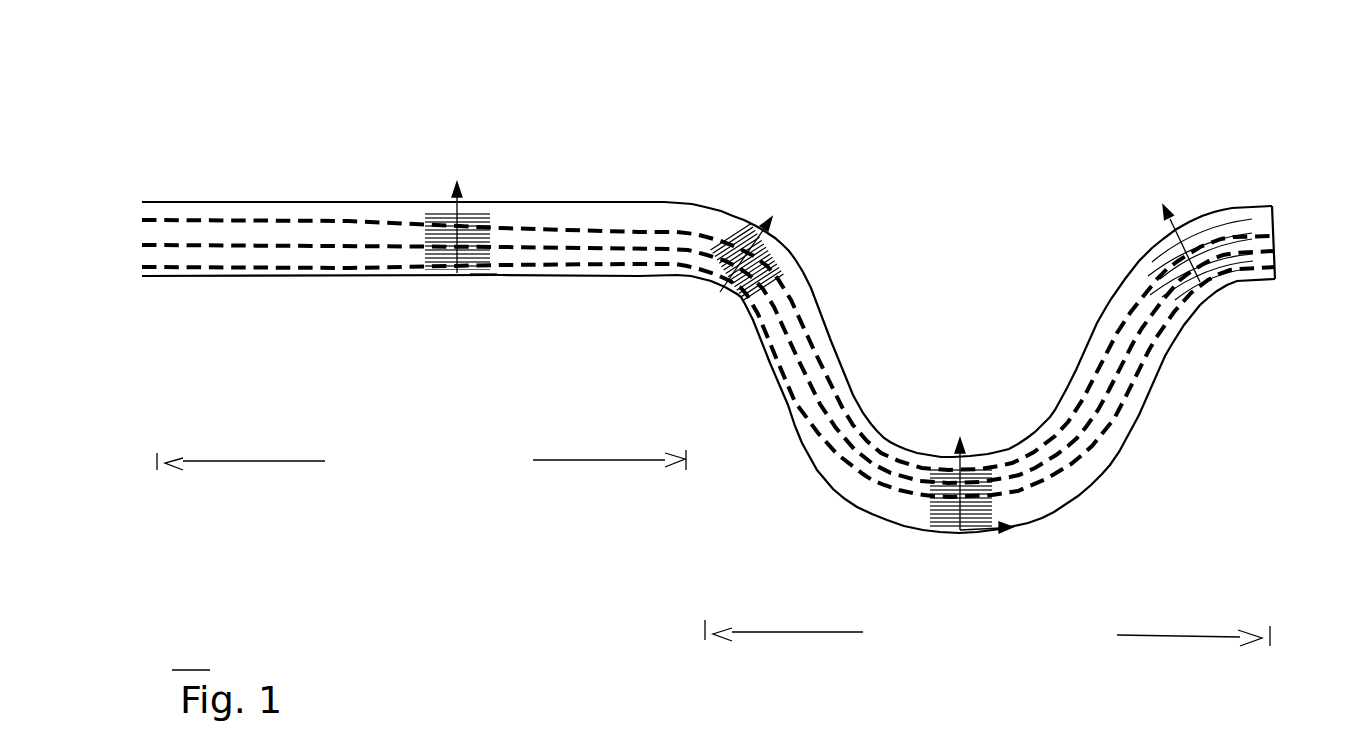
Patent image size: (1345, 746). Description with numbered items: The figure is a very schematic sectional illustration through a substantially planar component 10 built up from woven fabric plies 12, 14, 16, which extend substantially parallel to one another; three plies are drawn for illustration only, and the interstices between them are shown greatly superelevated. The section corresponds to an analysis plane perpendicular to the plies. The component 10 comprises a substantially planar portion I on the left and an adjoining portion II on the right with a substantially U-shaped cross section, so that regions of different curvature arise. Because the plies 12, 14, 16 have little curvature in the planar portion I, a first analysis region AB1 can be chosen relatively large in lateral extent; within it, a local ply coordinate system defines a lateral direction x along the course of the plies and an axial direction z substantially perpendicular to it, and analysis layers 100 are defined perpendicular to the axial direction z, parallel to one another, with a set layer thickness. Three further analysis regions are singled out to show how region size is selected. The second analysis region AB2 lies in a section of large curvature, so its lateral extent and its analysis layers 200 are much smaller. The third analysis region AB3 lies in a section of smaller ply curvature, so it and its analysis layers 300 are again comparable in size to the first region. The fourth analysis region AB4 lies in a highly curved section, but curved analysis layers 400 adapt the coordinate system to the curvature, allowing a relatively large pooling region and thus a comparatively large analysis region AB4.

The component 10 is at (440, 104).
The woven fabric ply 12 is at (142, 217).
The woven fabric ply 14 is at (141, 244).
The woven fabric ply 16 is at (141, 267).
The analysis layers 100 is at (423, 255).
The analysis layers 200 is at (773, 262).
The analysis layers 300 is at (930, 513).
The curved analysis layers 400 is at (1195, 237).
The first analysis region AB1 is at (436, 292).
The second analysis region AB2 is at (757, 196).
The third analysis region AB3 is at (945, 430).
The fourth analysis region AB4 is at (1206, 192).
The substantially planar portion I is at (430, 470).
The portion with U-shaped cross section II is at (1010, 645).
The axial direction z is at (465, 192).
The lateral direction x is at (497, 272).